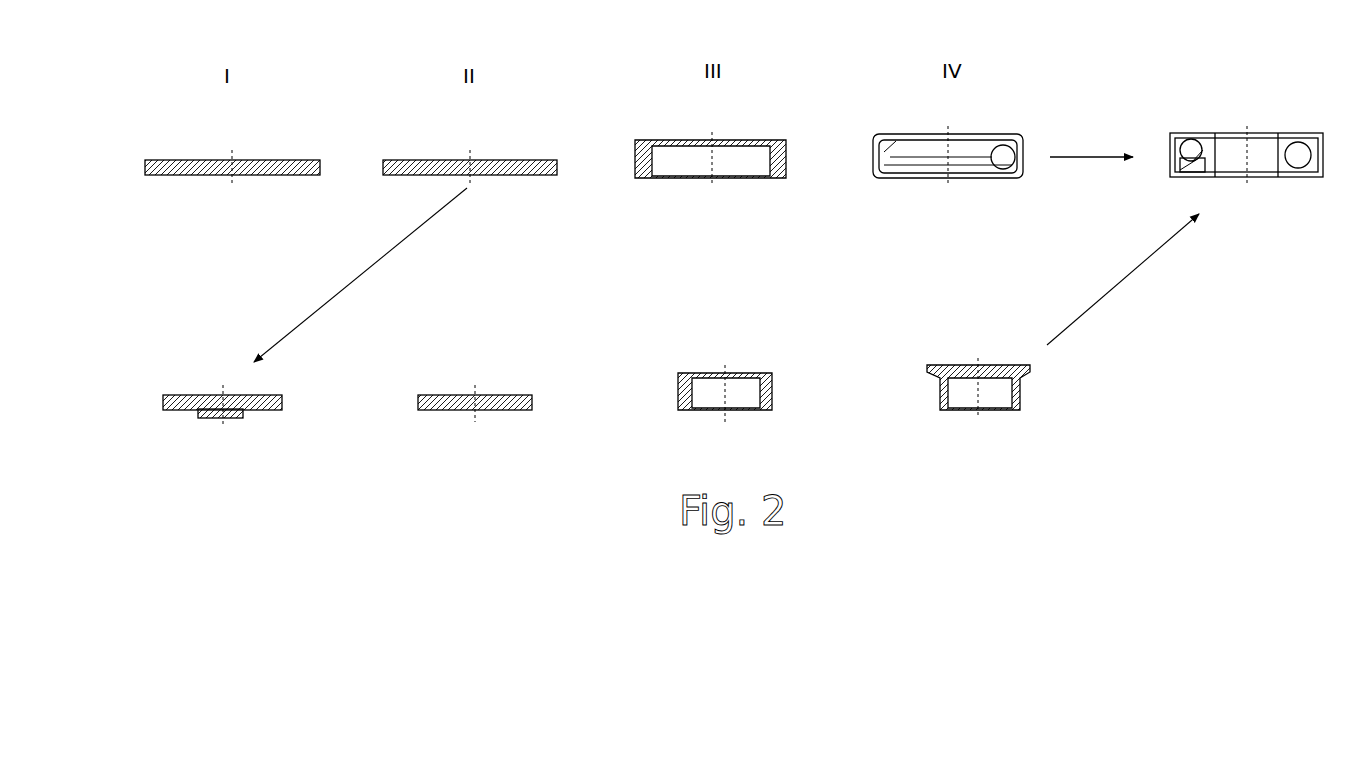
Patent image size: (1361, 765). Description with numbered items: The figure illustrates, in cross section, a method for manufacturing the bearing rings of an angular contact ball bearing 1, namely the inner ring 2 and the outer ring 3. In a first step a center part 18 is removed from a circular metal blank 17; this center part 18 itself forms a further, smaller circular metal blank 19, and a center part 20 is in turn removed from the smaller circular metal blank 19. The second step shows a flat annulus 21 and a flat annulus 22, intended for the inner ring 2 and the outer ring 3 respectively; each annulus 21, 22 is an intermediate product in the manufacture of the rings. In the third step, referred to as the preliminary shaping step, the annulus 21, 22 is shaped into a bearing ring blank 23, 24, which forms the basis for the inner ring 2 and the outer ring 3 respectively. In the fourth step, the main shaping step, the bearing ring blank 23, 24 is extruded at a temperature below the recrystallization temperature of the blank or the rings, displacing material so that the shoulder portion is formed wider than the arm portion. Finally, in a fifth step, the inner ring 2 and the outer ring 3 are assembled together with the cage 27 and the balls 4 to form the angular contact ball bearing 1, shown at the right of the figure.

The angular contact ball bearing 1 is at (1283, 120).
The inner ring 2 is at (1210, 133).
The outer ring 3 is at (1010, 133).
The balls 4 is at (1306, 168).
The circular metal blank 17 is at (152, 177).
The center part 18 is at (170, 395).
The smaller circular metal blank 19 is at (215, 381).
The center part 20 is at (232, 418).
The flat annulus 21 is at (545, 160).
The flat annulus 22 is at (505, 393).
The bearing ring blank 23 is at (777, 140).
The bearing ring blank 24 is at (765, 373).
The cage 27 is at (1190, 178).